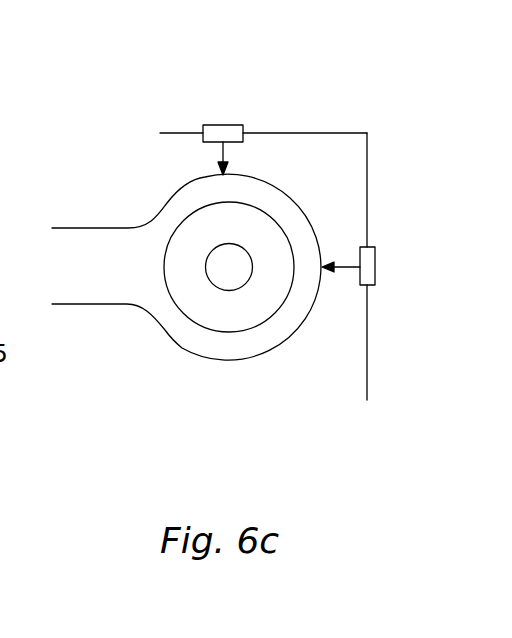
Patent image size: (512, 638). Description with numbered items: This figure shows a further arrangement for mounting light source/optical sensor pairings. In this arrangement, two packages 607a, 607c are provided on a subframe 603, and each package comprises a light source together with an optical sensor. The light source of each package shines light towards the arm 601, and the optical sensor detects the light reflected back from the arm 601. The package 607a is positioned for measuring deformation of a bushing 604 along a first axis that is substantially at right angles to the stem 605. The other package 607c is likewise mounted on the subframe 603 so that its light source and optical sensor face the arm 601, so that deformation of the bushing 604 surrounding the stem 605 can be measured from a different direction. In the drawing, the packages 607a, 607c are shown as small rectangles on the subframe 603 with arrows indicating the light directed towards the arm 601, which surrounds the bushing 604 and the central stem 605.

The arm 601 is at (85, 255).
The subframe 603 is at (367, 182).
The bushing 604 is at (235, 310).
The stem 605 is at (220, 276).
The package 607a is at (223, 134).
The package 607c is at (375, 270).